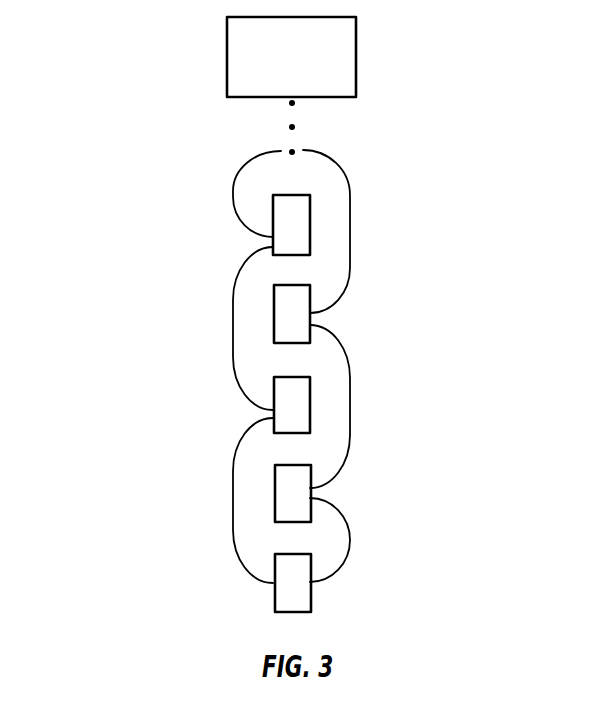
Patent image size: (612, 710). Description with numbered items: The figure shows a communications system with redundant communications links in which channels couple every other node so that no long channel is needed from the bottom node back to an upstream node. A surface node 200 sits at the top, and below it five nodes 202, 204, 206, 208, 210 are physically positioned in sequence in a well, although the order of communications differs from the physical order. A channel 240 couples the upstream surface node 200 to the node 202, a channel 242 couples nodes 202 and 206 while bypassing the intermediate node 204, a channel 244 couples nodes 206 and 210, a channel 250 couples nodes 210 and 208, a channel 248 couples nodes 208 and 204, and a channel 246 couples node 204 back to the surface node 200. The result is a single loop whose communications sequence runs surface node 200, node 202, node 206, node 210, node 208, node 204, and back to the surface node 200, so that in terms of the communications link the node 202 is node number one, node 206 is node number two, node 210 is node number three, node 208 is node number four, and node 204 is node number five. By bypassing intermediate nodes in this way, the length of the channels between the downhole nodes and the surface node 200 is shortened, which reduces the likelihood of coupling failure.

The surface node 200 is at (227, 53).
The node 202 is at (310, 223).
The node 204 is at (310, 293).
The node 206 is at (310, 405).
The node 208 is at (275, 492).
The node 210 is at (312, 565).
The channel 240 is at (233, 190).
The channel 242 is at (233, 327).
The channel 244 is at (232, 500).
The channel 246 is at (338, 165).
The channel 248 is at (348, 408).
The channel 250 is at (338, 570).